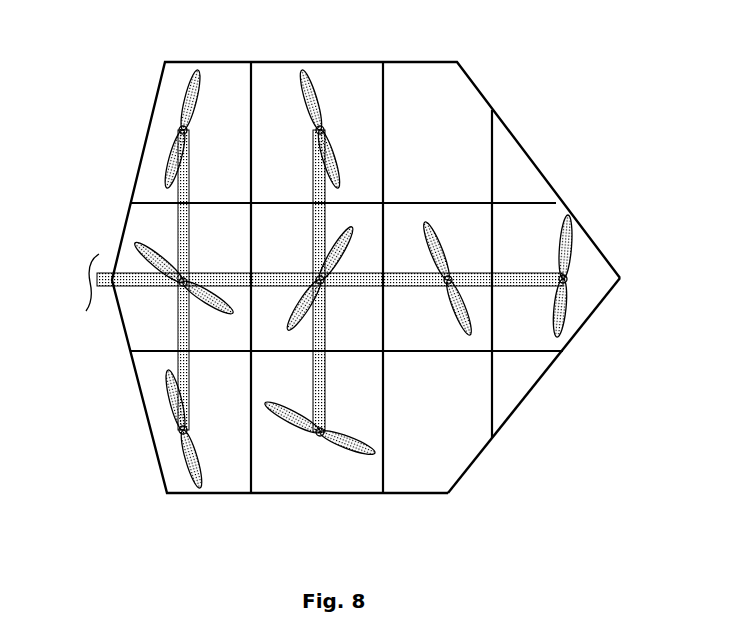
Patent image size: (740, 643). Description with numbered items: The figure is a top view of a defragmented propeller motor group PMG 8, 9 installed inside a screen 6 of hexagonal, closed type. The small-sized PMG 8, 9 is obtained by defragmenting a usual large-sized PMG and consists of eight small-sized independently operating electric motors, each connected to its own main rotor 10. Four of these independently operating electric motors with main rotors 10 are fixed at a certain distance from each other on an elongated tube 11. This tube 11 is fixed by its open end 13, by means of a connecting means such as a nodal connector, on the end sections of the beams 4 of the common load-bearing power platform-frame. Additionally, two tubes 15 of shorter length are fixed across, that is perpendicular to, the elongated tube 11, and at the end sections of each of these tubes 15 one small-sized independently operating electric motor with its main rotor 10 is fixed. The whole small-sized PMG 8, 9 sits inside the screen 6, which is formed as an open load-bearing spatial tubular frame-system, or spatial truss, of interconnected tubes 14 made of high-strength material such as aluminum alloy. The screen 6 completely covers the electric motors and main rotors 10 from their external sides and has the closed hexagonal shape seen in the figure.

The beams of the load-bearing power platform-frame 4 is at (317, 196).
The tube 11 is at (140, 278).
The screen 6 is at (535, 400).
The front PMG 8 is at (342, 277).
The rear PMG 9 is at (157, 325).
The small-sized main rotor 10 is at (290, 327).
The open end of the tube 13 is at (97, 257).
The tubes of the open spatial tubular frame-screen 14 is at (383, 243).
The additional tubes 15 is at (188, 240).